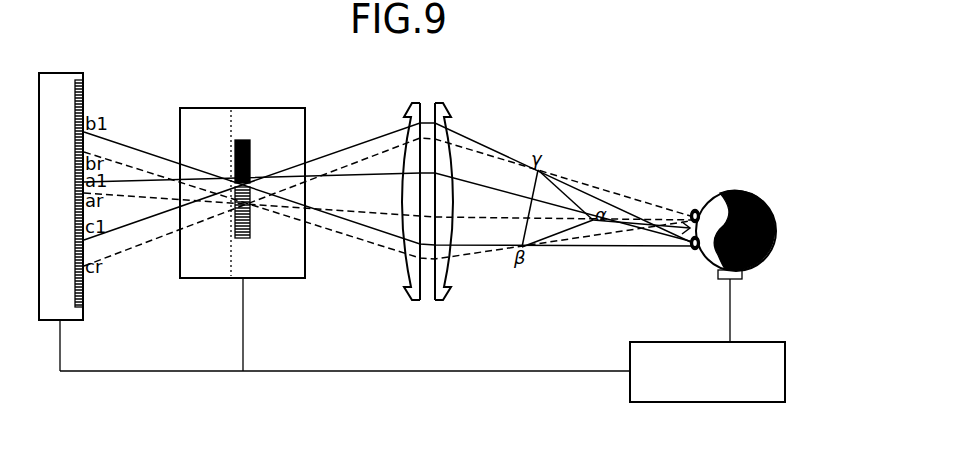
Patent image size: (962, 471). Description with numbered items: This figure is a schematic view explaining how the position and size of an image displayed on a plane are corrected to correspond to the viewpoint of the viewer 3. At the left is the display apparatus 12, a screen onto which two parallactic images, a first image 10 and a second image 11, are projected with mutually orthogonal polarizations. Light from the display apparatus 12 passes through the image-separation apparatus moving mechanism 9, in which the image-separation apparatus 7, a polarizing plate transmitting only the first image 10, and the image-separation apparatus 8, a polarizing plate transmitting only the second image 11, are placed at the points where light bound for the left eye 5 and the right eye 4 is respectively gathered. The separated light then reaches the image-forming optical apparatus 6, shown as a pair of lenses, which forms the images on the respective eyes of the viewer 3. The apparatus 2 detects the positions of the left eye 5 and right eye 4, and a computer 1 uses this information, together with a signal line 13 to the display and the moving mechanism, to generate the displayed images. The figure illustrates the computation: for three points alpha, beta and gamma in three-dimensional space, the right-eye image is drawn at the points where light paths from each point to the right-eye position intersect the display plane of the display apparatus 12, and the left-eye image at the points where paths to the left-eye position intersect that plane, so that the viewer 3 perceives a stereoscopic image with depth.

The computer 1 is at (658, 402).
The apparatus for detecting the positions of the left and right eyes 2 is at (743, 279).
The viewer 3 is at (735, 191).
The right eye 4 is at (693, 209).
The left eye 5 is at (694, 250).
The image-forming optical apparatus 6 is at (443, 103).
The image-separation apparatus 7 is at (250, 160).
The image-separation apparatus 8 is at (250, 226).
The image-separation apparatus moving mechanism 9 is at (305, 260).
The first image 10 is at (84, 100).
The second image 11 is at (79, 193).
The display apparatus 12 is at (70, 73).
The signal line 13 is at (243, 322).